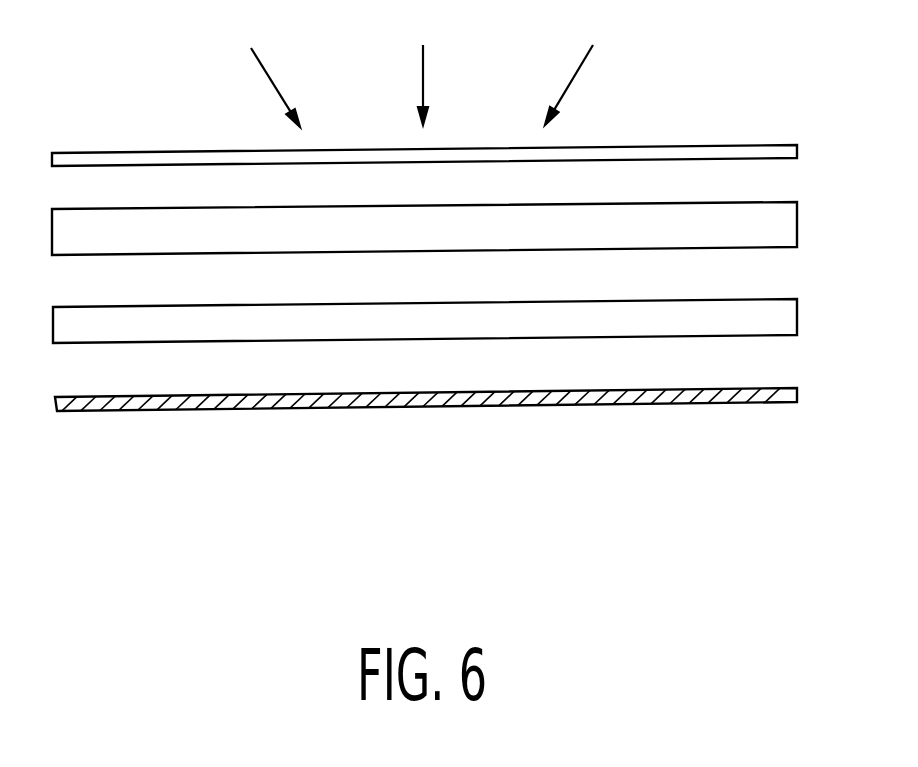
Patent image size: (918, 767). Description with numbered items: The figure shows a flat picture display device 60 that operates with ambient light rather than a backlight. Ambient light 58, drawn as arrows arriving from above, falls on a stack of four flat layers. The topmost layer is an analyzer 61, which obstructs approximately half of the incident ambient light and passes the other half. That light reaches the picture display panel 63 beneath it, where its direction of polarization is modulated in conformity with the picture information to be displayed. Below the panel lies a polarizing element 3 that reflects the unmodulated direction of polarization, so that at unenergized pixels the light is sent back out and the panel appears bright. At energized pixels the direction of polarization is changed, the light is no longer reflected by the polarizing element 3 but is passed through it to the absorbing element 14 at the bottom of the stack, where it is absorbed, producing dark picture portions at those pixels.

The incident light 58 is at (577, 65).
The analyzer 61 is at (782, 152).
The picture display panel 63 is at (778, 217).
The polarizing element 3 is at (785, 313).
The absorbing element 14 is at (788, 397).
The device 60 is at (89, 493).